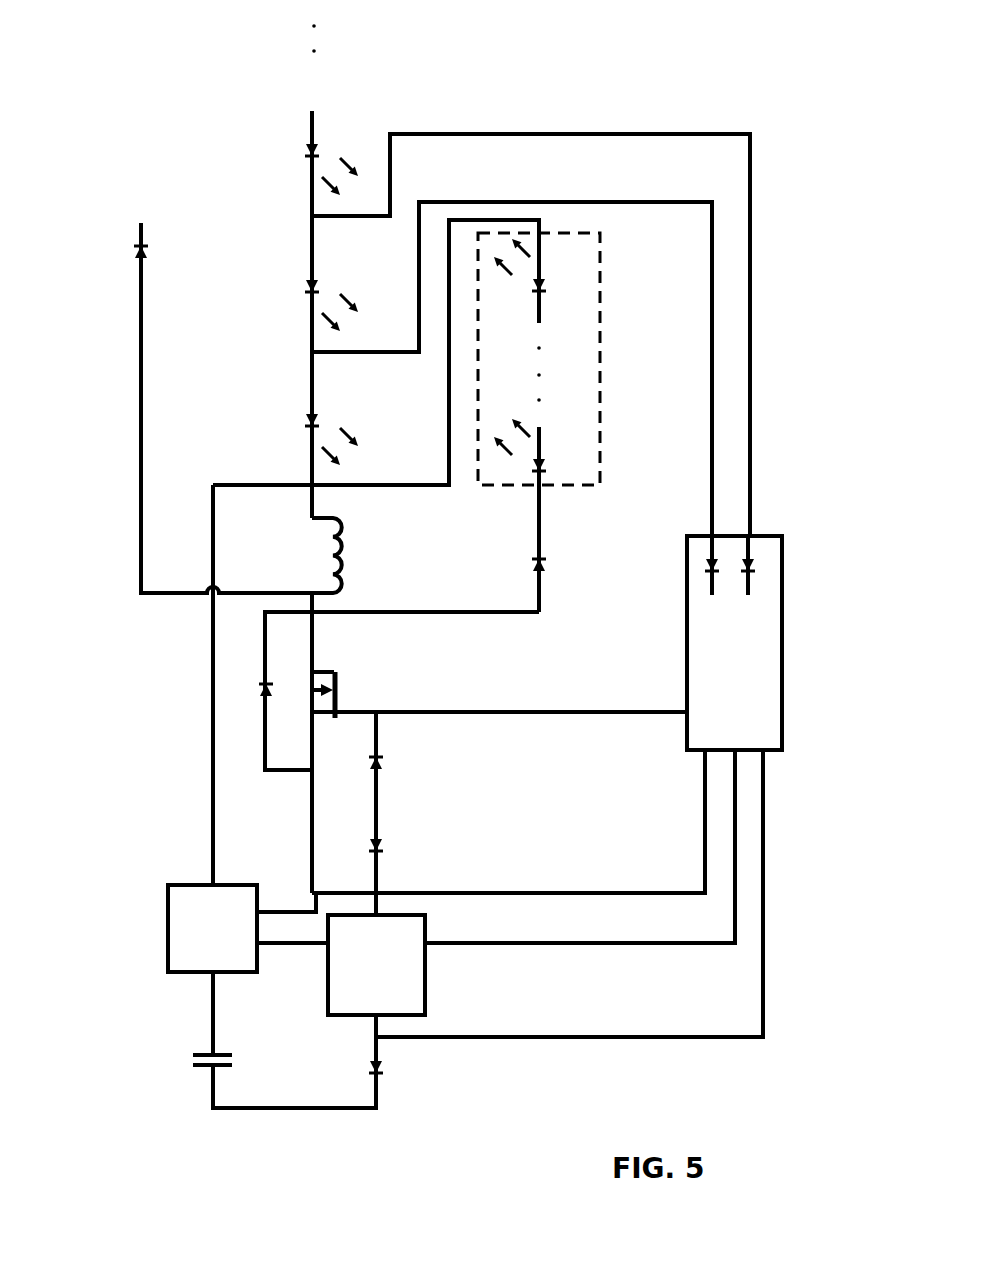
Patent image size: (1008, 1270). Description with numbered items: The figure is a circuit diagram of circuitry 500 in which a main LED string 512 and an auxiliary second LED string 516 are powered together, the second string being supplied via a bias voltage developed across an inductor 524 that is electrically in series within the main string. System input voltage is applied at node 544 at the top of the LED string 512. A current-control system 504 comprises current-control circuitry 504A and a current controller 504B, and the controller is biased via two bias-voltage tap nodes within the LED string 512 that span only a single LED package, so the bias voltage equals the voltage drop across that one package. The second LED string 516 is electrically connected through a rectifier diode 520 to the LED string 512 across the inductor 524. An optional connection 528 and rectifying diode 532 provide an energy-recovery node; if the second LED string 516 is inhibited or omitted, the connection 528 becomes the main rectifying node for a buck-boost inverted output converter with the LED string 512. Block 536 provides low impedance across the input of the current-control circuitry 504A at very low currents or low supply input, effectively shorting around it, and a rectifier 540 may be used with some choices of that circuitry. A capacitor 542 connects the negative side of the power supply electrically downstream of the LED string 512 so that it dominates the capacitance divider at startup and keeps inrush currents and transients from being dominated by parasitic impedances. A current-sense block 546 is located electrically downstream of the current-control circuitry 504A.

The circuitry 500 is at (772, 199).
The current-control system 504 is at (458, 730).
The current-control circuitry 504A is at (266, 691).
The current controller 504B is at (734, 643).
The LED string 512 is at (322, 270).
The second LED string 516 is at (600, 277).
The rectifier diode 520 is at (541, 567).
The inductor 524 is at (335, 518).
The connection 528 is at (183, 391).
The rectifying diode 532 is at (141, 252).
The block 536 is at (212, 928).
The rectifier 540 is at (382, 1068).
The capacitor 542 is at (193, 1066).
The node 544 is at (313, 76).
The current-sense block 546 is at (328, 1000).